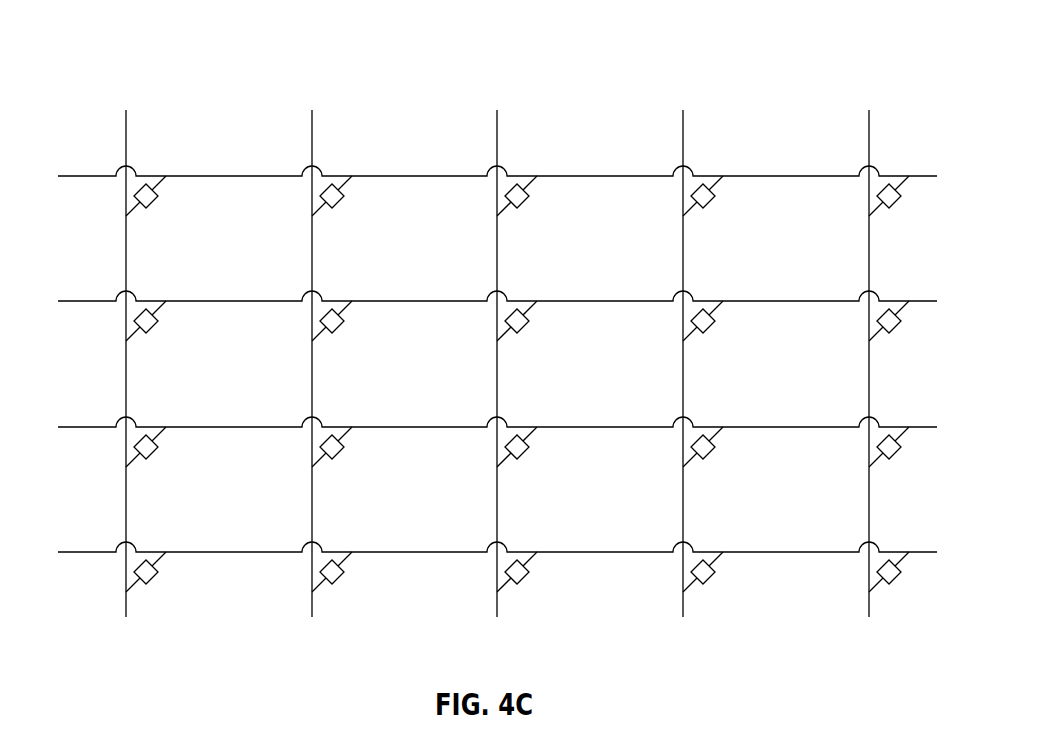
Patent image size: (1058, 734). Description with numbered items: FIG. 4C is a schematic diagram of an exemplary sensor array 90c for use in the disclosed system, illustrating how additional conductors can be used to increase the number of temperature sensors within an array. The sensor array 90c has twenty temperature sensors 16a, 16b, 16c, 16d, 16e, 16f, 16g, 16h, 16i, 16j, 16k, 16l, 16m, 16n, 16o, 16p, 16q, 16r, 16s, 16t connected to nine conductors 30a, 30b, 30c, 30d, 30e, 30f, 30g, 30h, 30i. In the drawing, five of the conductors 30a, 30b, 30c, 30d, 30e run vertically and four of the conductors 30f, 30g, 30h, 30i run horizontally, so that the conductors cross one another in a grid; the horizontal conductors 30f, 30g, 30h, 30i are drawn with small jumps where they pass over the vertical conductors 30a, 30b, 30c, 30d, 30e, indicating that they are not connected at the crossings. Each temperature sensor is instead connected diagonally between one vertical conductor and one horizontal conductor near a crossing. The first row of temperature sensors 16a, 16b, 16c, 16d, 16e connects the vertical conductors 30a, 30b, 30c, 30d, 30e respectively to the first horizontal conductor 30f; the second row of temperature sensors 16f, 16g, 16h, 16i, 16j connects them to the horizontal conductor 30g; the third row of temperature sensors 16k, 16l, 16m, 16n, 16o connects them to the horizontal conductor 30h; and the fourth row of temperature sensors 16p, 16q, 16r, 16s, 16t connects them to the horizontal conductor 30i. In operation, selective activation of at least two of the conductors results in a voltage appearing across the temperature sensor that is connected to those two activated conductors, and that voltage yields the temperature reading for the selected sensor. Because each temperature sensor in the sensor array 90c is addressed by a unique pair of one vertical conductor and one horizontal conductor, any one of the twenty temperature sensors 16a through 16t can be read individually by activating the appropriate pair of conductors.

The sensor array 90c is at (807, 31).
The conductor 30a is at (126, 128).
The conductor 30b is at (312, 128).
The conductor 30c is at (497, 128).
The conductor 30d is at (683, 128).
The conductor 30e is at (869, 128).
The conductor 30f is at (82, 176).
The conductor 30g is at (82, 301).
The conductor 30h is at (82, 427).
The conductor 30i is at (82, 552).
The temperature sensor 16a is at (153, 203).
The temperature sensor 16b is at (339, 203).
The temperature sensor 16c is at (524, 203).
The temperature sensor 16d is at (710, 203).
The temperature sensor 16e is at (896, 203).
The temperature sensor 16f is at (153, 328).
The temperature sensor 16g is at (339, 328).
The temperature sensor 16h is at (524, 328).
The temperature sensor 16i is at (710, 328).
The temperature sensor 16j is at (896, 328).
The temperature sensor 16k is at (153, 454).
The temperature sensor 16l is at (339, 454).
The temperature sensor 16m is at (524, 454).
The temperature sensor 16n is at (710, 454).
The temperature sensor 16o is at (896, 454).
The temperature sensor 16p is at (153, 579).
The temperature sensor 16q is at (339, 579).
The temperature sensor 16r is at (524, 579).
The temperature sensor 16s is at (710, 579).
The temperature sensor 16t is at (896, 579).